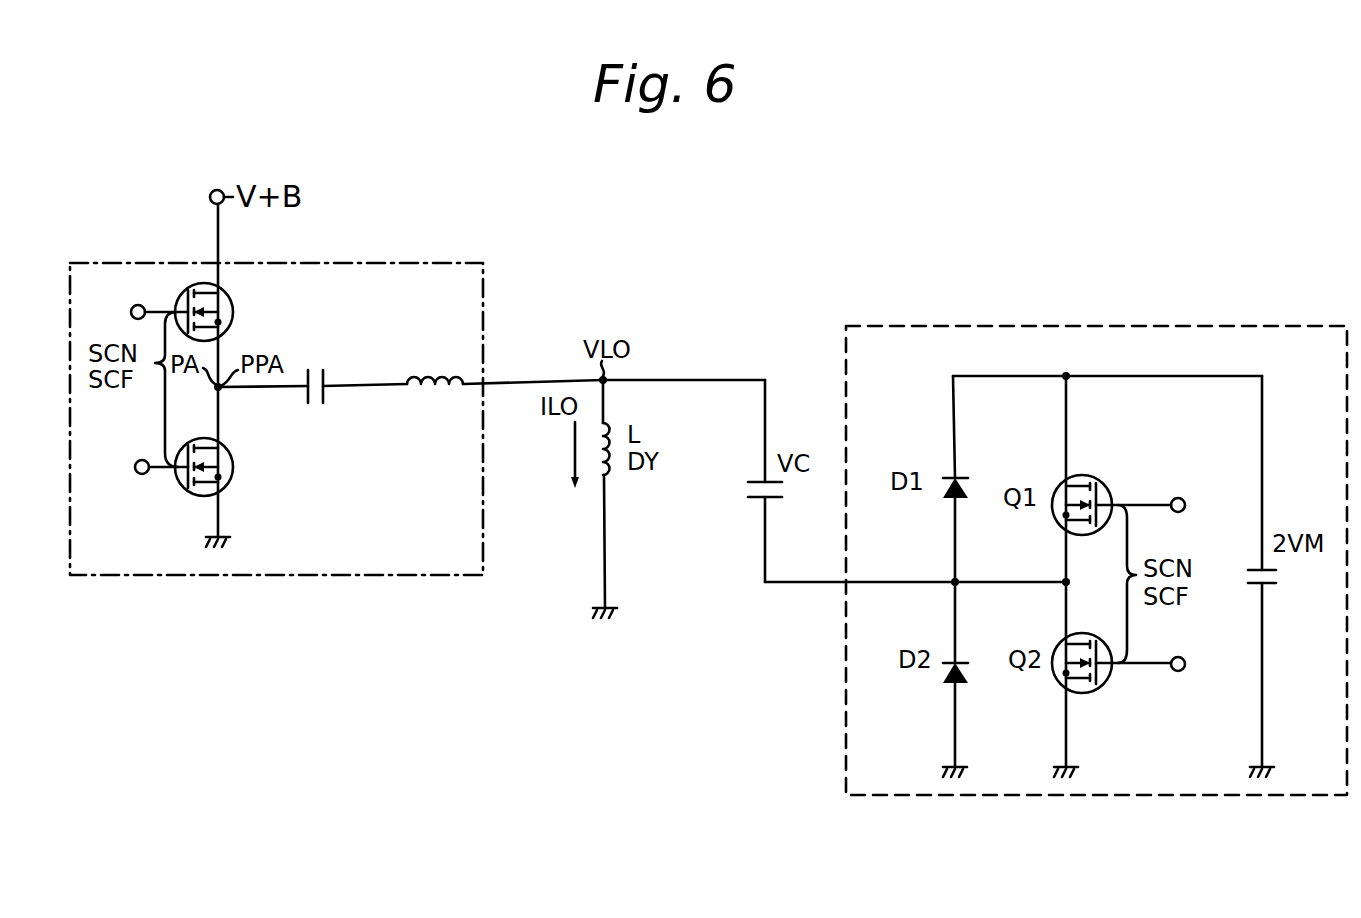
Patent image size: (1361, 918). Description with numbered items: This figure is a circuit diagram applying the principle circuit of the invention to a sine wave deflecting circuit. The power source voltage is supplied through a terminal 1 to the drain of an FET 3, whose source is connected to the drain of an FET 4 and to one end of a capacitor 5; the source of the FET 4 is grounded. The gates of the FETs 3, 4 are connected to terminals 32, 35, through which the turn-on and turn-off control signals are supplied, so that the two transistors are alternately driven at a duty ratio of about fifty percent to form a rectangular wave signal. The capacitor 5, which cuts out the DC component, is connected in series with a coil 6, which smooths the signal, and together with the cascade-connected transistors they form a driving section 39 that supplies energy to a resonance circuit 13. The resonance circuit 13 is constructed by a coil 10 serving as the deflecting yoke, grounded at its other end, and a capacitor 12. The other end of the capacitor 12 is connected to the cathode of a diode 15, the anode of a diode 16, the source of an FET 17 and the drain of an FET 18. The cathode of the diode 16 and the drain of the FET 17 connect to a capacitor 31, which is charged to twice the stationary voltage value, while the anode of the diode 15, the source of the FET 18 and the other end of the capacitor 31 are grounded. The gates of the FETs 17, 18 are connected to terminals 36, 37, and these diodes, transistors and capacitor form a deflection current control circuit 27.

The terminal 1 is at (216, 189).
The driving section 39 is at (376, 259).
The terminal 32 is at (137, 305).
The FET 3 is at (232, 302).
The FET 4 is at (234, 460).
The terminal 35 is at (142, 474).
The capacitor 5 is at (316, 404).
The coil 6 is at (437, 398).
The resonance circuit 13 is at (716, 375).
The coil 10 is at (598, 470).
The capacitor 12 is at (747, 490).
The deflection current control circuit 27 is at (934, 316).
The diode 16 is at (948, 503).
The FET 17 is at (1103, 486).
The terminal 36 is at (1185, 504).
The diode 15 is at (948, 688).
The FET 18 is at (1062, 687).
The terminal 37 is at (1186, 663).
The capacitor 31 is at (1278, 580).